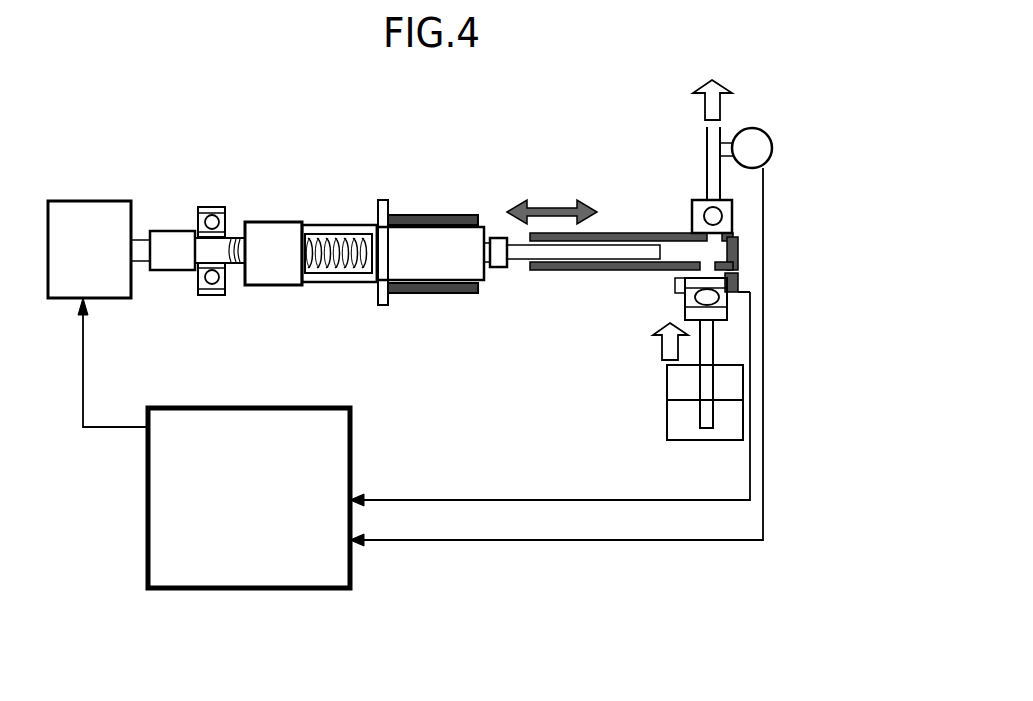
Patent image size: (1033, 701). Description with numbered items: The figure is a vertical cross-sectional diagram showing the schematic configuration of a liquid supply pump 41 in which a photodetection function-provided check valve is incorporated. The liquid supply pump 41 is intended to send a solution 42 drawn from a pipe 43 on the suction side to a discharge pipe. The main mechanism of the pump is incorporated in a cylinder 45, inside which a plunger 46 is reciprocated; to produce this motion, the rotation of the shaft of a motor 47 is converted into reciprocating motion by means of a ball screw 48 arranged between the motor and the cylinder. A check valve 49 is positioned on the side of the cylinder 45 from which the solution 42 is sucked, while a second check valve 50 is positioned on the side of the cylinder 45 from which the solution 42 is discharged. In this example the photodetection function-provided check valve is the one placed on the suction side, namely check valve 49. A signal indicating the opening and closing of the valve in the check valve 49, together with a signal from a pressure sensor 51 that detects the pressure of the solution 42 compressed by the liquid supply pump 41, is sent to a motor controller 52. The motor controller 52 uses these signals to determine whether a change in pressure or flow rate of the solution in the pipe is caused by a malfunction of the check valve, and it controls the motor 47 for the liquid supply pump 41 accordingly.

The liquid supply pump 41 is at (352, 143).
The solution 42 is at (668, 415).
The pipe 43 is at (713, 343).
The cylinder 45 is at (671, 250).
The plunger 46 is at (562, 258).
The motor 47 is at (79, 205).
The ball screw 48 is at (273, 222).
The check valve 49 is at (738, 280).
The check valve 50 is at (732, 217).
The pressure sensor 51 is at (748, 128).
The motor controller 52 is at (148, 512).